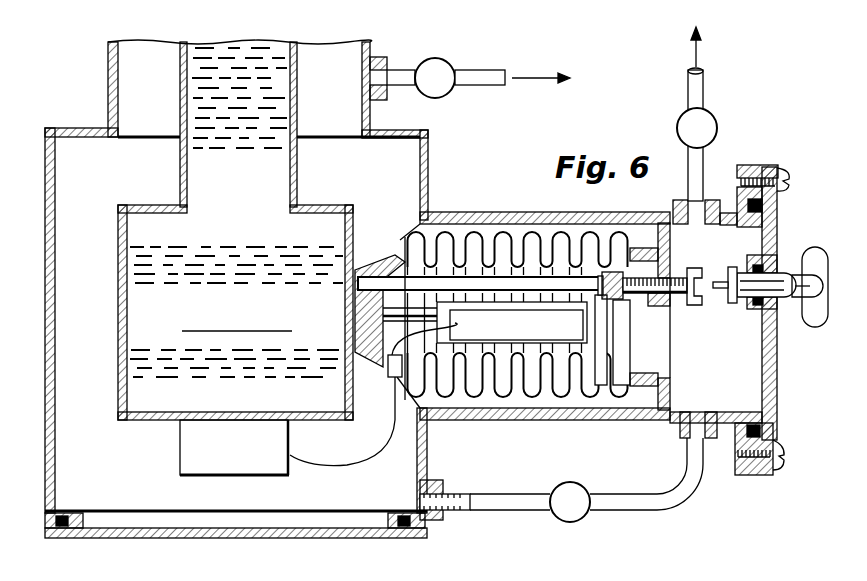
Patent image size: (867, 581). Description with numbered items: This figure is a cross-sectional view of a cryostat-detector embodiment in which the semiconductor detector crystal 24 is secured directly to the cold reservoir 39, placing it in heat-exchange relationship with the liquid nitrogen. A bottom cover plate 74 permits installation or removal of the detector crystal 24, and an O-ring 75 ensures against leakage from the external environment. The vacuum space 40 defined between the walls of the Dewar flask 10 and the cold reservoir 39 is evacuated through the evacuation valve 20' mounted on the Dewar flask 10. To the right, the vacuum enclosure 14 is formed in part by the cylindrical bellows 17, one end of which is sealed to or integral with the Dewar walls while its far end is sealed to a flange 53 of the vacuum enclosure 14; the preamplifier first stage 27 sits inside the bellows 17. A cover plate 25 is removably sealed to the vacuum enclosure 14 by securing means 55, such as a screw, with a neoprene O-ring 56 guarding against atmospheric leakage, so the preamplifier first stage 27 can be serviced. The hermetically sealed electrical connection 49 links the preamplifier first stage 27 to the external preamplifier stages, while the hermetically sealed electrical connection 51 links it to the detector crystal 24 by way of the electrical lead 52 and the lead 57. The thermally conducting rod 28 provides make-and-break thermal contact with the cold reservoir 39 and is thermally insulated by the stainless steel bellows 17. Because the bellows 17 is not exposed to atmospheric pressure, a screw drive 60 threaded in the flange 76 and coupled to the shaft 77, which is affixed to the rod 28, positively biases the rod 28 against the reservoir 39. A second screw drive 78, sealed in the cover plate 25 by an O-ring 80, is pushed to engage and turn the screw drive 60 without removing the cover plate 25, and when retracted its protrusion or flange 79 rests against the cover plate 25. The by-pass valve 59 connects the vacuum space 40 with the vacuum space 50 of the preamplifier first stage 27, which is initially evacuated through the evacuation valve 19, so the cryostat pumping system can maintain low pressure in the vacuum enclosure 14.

The Dewar flask 10 is at (108, 82).
The cold reservoir 39 is at (298, 101).
The evacuation valve 20' is at (488, 75).
The vacuum space 40 is at (402, 168).
The shaft 77 is at (484, 276).
The evacuation valve 19 is at (717, 130).
The flange 53 is at (750, 165).
The securing means 55 is at (784, 176).
The thermally conducting rod 28 is at (358, 275).
The flange 76 is at (670, 258).
The vacuum enclosure 14 is at (722, 225).
The O-ring 80 is at (762, 266).
The preamplifier first stage 27 is at (563, 337).
The screw drive 60 is at (696, 306).
The protrusion or flange 79 is at (731, 306).
The second screw drive 78 is at (813, 313).
The hermetically sealed electrical connection 49 is at (778, 345).
The hermetically sealed electrical connection 51 is at (394, 377).
The neoprene O-ring 56 is at (754, 418).
The cover plate 25 is at (771, 407).
The semiconductor detector crystal 24 is at (200, 450).
The lead 57 is at (366, 462).
The electrical lead 52 is at (433, 352).
The bellows 17 is at (532, 397).
The vacuum space 50 is at (692, 397).
The by-pass valve 59 is at (590, 516).
The O-ring 75 is at (67, 538).
The bottom cover plate 74 is at (250, 540).